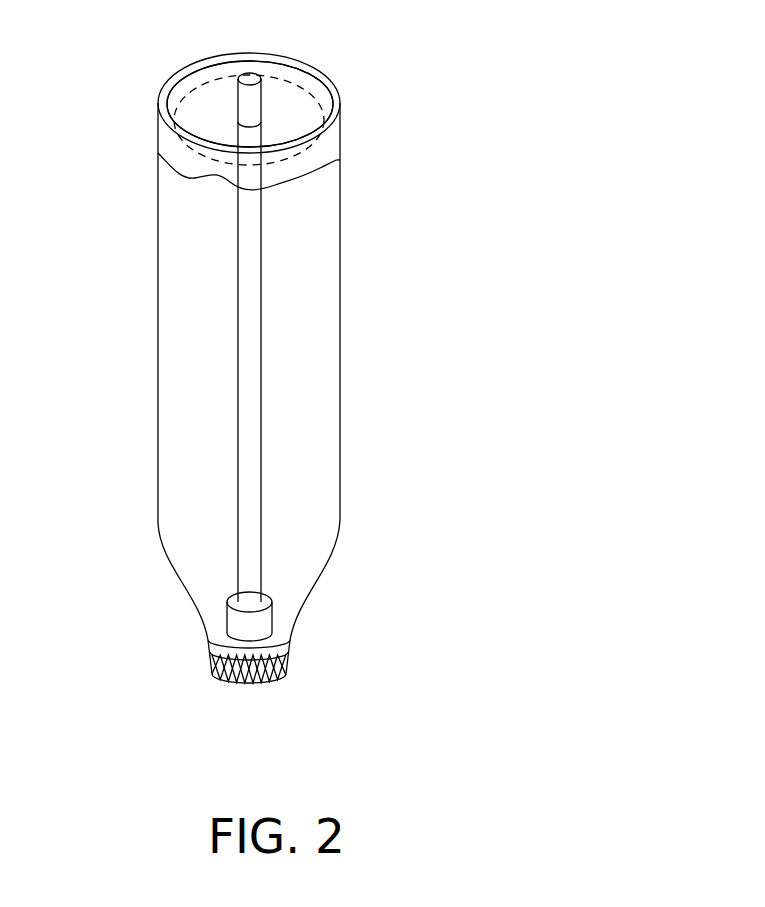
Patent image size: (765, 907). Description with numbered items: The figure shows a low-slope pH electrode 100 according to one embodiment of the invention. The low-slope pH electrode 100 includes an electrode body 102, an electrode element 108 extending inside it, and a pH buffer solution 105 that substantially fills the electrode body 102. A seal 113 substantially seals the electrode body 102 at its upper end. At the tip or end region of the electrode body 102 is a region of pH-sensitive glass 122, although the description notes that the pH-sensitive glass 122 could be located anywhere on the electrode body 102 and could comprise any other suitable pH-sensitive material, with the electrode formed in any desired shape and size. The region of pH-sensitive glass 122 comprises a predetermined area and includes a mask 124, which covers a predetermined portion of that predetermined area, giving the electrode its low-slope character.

The low-slope pH electrode 100 is at (550, 694).
The electrode body 102 is at (339, 197).
The pH buffer solution 105 is at (188, 332).
The electrode element 108 is at (261, 367).
The seal 113 is at (200, 107).
The region of pH-sensitive glass 122 is at (290, 638).
The mask 124 is at (267, 682).